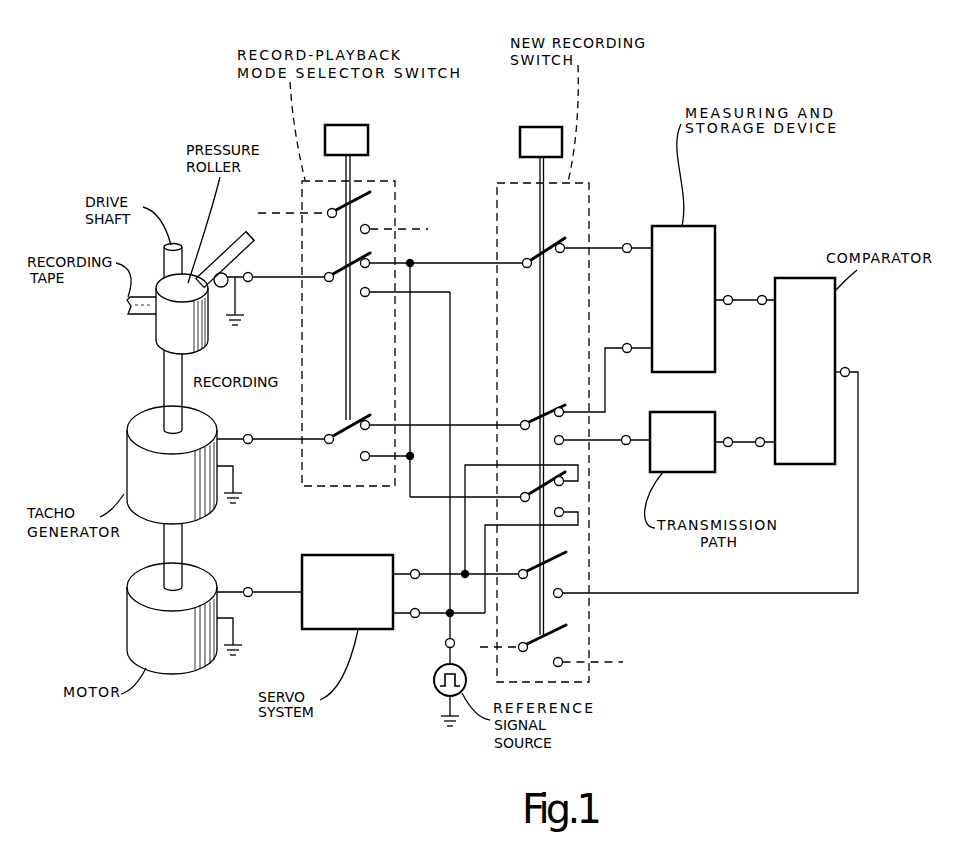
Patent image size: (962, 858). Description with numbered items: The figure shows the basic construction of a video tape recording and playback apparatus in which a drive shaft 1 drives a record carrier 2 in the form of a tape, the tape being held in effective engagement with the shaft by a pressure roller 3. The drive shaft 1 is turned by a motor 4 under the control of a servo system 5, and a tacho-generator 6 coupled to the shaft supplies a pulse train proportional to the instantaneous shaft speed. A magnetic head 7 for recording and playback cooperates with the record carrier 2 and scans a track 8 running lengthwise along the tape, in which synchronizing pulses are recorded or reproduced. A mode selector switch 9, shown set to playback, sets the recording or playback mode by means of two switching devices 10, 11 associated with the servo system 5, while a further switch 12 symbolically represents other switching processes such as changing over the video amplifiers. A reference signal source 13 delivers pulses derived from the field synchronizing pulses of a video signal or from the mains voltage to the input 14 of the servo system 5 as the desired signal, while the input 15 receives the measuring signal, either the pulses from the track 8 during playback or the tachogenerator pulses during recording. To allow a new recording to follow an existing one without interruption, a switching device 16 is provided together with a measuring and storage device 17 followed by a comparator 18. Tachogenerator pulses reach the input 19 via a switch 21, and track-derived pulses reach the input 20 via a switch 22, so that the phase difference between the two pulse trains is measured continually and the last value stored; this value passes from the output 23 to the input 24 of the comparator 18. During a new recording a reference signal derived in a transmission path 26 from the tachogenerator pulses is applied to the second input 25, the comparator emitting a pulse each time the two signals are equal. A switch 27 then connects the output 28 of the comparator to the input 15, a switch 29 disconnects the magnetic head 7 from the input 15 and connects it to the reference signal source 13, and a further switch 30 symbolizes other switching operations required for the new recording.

The drive shaft 1 is at (174, 247).
The record carrier 2 is at (246, 237).
The pressure roller 3 is at (196, 340).
The motor 4 is at (195, 657).
The servo system 5 is at (334, 615).
The tacho-generator 6 is at (200, 500).
The magnetic head 7 is at (237, 282).
The track 8 is at (146, 316).
The mode selector switch 9 is at (388, 175).
The switching device 10 is at (358, 278).
The switching device 11 is at (357, 440).
The switch 12 is at (355, 218).
The reference signal source 13 is at (434, 676).
The input of the servo system 14 is at (415, 618).
The input of the servo system 15 is at (415, 569).
The switching device 16 is at (585, 175).
The measuring and storage device 17 is at (693, 237).
The comparator 18 is at (806, 290).
The input of the measuring and storage device 19 is at (627, 343).
The input of the measuring and storage device 20 is at (627, 243).
The switch 21 is at (555, 422).
The switch 22 is at (548, 258).
The output of the measuring and storage device 23 is at (728, 295).
The input of the comparator 24 is at (762, 305).
The second input of the comparator 25 is at (760, 447).
The transmission path 26 is at (689, 465).
The switch 27 is at (550, 577).
The output of the comparator 28 is at (845, 367).
The switch 29 is at (550, 496).
The switch 30 is at (550, 648).